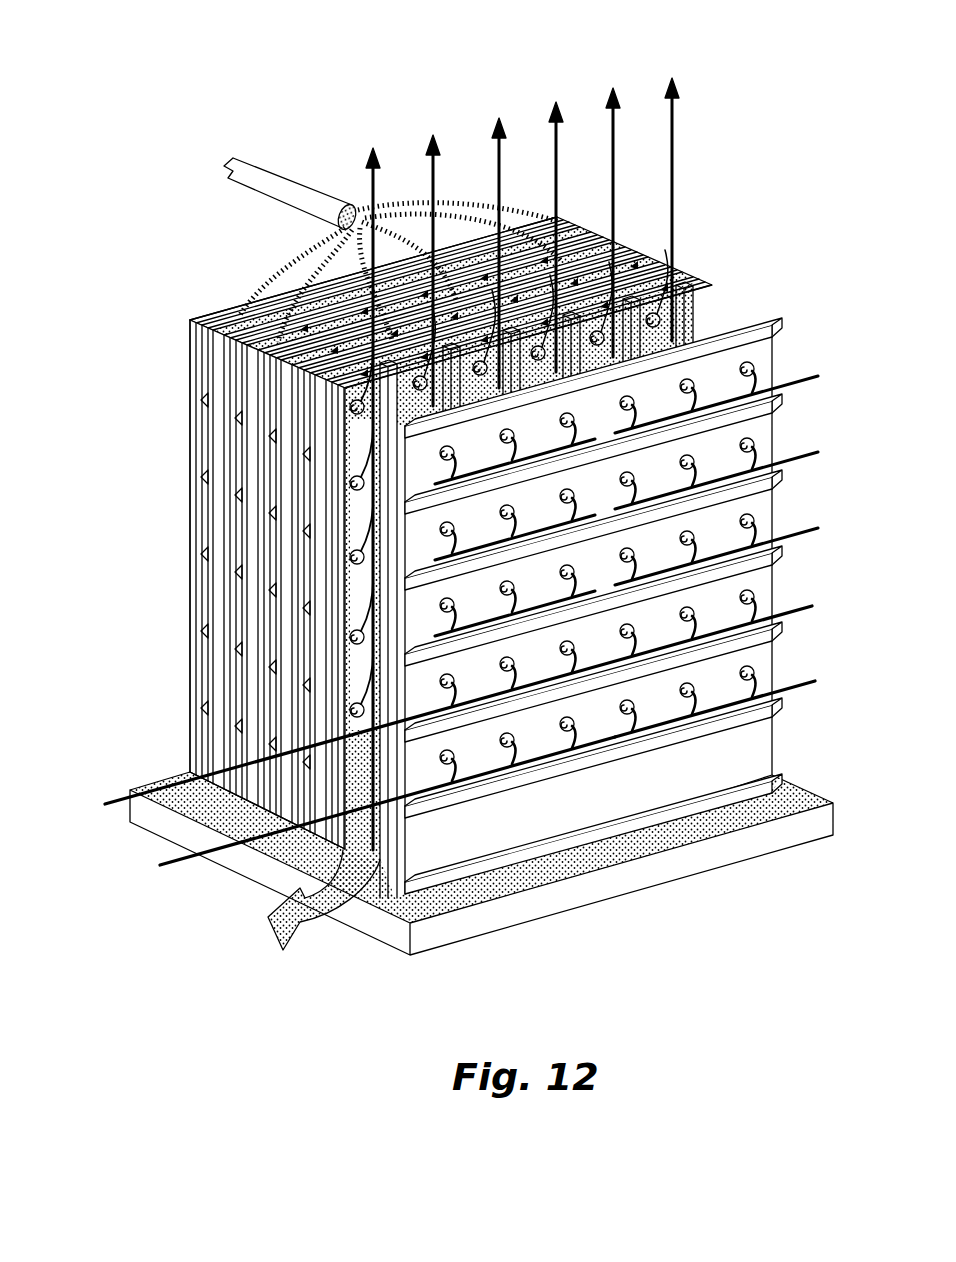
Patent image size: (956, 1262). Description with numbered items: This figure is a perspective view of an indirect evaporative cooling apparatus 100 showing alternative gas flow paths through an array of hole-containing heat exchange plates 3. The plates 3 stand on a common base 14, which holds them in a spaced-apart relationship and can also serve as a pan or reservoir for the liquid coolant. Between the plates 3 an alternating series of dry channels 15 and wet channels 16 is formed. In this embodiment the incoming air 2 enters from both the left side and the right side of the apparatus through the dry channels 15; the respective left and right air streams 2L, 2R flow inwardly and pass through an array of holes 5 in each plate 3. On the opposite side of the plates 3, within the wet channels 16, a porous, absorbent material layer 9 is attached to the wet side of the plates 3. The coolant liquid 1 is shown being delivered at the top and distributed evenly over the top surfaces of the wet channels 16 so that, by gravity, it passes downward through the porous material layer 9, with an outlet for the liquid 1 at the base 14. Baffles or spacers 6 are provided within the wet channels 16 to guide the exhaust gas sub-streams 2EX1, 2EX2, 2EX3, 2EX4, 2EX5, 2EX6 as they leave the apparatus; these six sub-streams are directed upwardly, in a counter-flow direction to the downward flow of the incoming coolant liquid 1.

The indirect evaporative cooling apparatus 100 is at (698, 156).
The coolant liquid 1 is at (206, 154).
The incoming air 2 is at (220, 470).
The left air stream 2L is at (362, 818).
The right air stream 2R is at (733, 703).
The exhaust gas sub-stream 2EX1 is at (373, 165).
The exhaust gas sub-stream 2EX2 is at (434, 165).
The exhaust gas sub-stream 2EX3 is at (500, 160).
The exhaust gas sub-stream 2EX4 is at (558, 140).
The exhaust gas sub-stream 2EX5 is at (615, 135).
The exhaust gas sub-stream 2EX6 is at (674, 130).
The heat exchange plate 3 is at (192, 418).
The array of holes 5 is at (786, 327).
The baffles or spacers 6 is at (700, 292).
The porous material layer 9 is at (735, 765).
The common base 14 is at (587, 887).
The dry channel 15 is at (775, 502).
The wet channel 16 is at (662, 303).